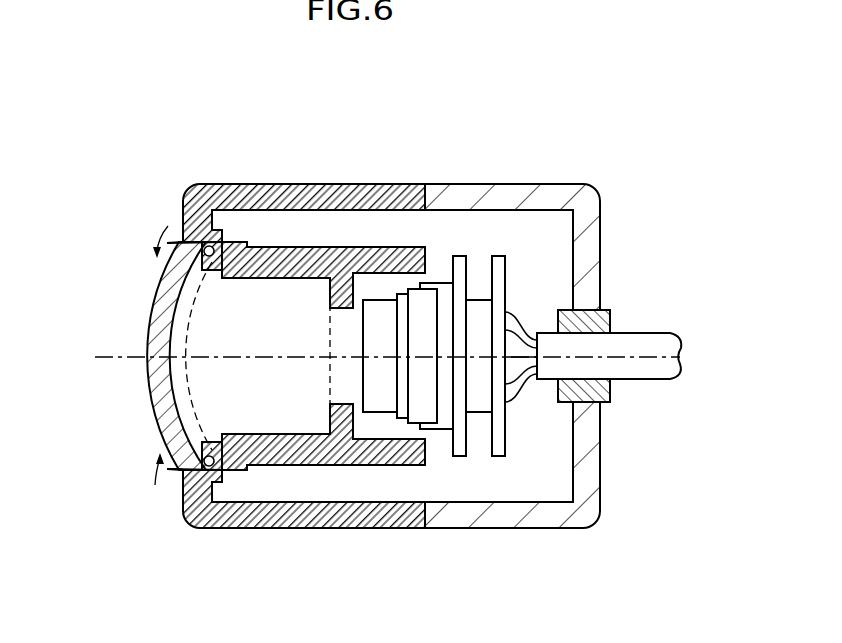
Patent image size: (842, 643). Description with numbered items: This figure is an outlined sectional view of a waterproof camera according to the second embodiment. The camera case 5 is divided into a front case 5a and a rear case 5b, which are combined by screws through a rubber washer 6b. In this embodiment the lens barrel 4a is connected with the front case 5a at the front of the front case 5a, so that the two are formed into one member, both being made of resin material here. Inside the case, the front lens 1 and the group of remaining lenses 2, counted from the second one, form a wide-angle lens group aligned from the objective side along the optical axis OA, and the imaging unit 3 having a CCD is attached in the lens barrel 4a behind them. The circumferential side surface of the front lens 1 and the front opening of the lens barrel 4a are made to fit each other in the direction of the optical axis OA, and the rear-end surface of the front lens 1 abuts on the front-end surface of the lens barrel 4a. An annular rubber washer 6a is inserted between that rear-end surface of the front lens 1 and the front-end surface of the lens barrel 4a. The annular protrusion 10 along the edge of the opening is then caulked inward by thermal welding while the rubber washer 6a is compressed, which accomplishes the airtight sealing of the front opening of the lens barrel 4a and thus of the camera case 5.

The front lens 1 is at (158, 412).
The group of remaining lenses 2 is at (288, 420).
The imaging unit 3 is at (516, 275).
The lens barrel 4a is at (342, 260).
The camera case 5 is at (423, 365).
The front case 5a is at (293, 185).
The rear case 5b is at (580, 484).
The annular rubber washer 6a is at (210, 528).
The rubber washer 6b is at (418, 530).
The annular protrusion 10 is at (183, 232).
The optical axis OA is at (120, 357).